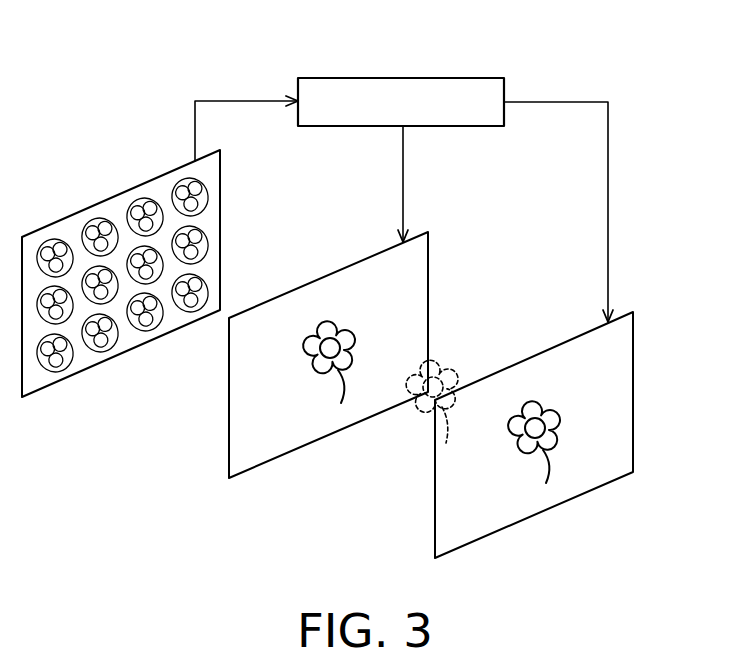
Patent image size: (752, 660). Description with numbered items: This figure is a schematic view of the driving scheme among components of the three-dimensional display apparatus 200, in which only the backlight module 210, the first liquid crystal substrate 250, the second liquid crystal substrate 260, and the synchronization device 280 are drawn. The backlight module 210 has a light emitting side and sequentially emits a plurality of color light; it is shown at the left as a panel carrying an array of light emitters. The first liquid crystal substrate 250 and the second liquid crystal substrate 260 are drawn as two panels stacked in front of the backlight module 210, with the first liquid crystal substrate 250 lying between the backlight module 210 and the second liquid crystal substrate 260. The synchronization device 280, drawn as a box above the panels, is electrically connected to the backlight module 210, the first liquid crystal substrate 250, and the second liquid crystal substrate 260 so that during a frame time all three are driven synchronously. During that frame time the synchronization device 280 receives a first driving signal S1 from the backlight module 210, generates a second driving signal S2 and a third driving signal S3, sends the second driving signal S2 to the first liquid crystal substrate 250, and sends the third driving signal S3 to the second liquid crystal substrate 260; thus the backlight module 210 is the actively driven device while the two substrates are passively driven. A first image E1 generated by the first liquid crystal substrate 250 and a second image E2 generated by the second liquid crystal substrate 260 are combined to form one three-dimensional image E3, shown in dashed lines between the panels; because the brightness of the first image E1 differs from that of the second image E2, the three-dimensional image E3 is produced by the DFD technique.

The 3D display apparatus 200 is at (708, 622).
The backlight module 210 is at (118, 195).
The synchronization device 280 is at (402, 78).
The first liquid crystal substrate 250 is at (328, 394).
The second liquid crystal substrate 260 is at (534, 462).
The first driving signal S1 is at (262, 100).
The second driving signal S2 is at (403, 168).
The third driving signal S3 is at (608, 170).
The first image E1 is at (308, 361).
The second image E2 is at (522, 455).
The 3D image E3 is at (420, 412).